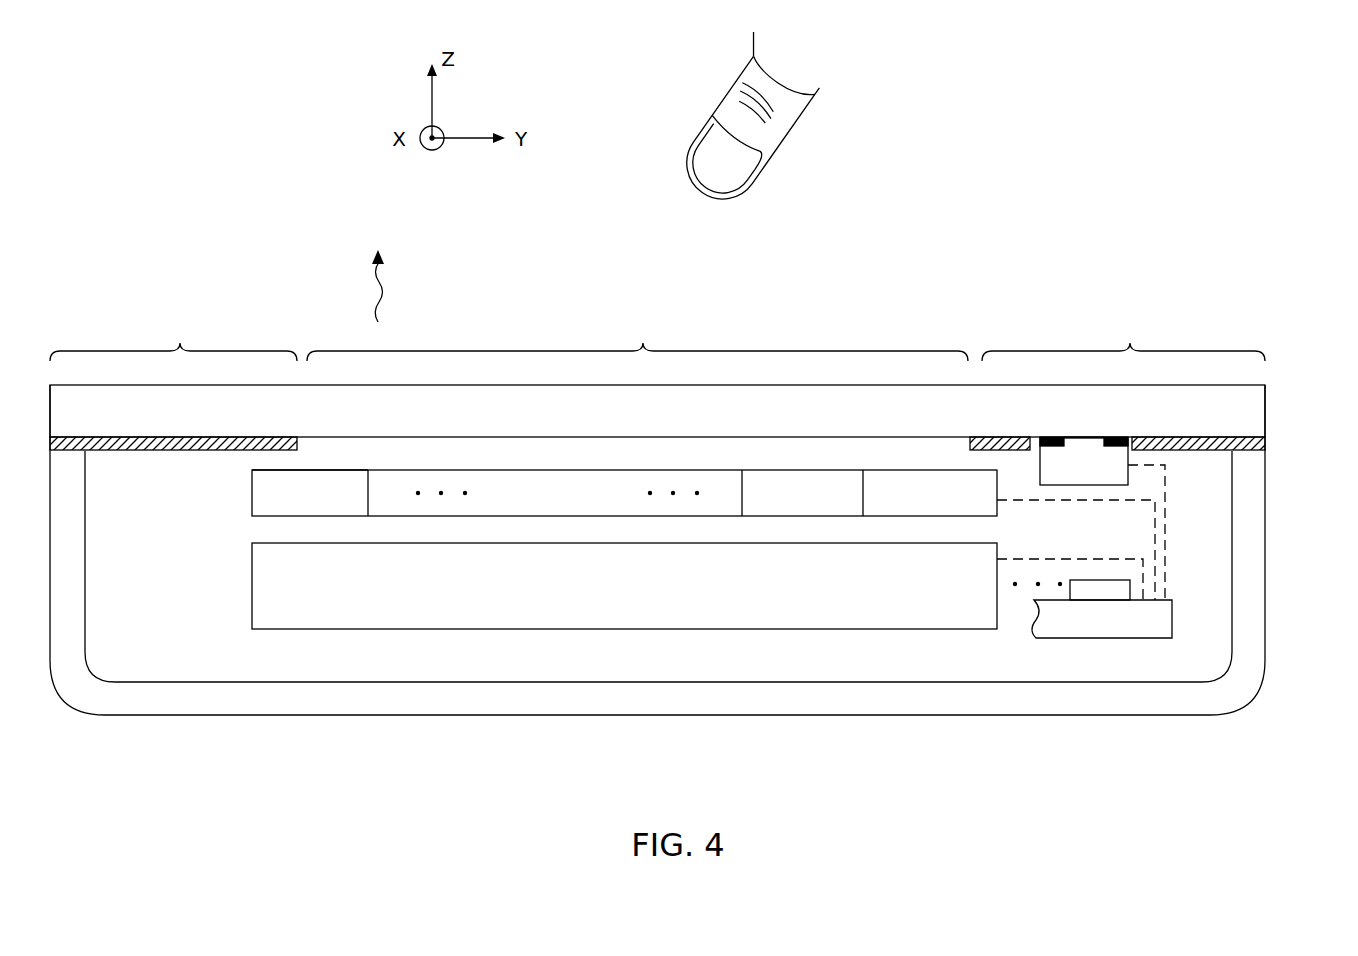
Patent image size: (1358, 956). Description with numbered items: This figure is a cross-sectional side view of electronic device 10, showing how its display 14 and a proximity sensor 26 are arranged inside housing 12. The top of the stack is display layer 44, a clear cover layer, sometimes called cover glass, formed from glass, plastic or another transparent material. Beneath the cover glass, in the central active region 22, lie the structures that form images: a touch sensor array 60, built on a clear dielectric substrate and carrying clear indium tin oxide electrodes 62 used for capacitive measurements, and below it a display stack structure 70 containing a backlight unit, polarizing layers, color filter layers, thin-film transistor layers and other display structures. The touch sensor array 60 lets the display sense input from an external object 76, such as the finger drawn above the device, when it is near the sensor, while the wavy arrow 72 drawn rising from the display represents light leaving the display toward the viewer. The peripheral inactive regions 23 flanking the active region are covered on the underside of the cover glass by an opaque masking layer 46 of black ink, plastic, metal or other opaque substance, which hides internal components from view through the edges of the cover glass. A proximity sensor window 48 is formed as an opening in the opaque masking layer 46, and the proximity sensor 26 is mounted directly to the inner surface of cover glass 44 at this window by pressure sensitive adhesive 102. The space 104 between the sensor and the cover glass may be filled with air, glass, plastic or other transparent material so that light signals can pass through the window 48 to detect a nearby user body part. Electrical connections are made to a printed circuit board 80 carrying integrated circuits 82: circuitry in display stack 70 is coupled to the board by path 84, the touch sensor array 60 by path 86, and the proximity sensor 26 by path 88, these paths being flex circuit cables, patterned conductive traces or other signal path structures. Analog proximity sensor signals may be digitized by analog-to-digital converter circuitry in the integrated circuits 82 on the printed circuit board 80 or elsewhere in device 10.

The electronic device 10 is at (1025, 41).
The housing 12 is at (148, 716).
The display 14 is at (756, 307).
The active region 22 is at (637, 340).
The inactive area 23 is at (657, 340).
The proximity sensor 26 is at (1080, 485).
The display layer 44 is at (1258, 412).
The opaque masking layer 46 is at (148, 451).
The proximity sensor window 48 is at (1062, 427).
The touch sensor array 60 is at (240, 470).
The electrodes 62 is at (320, 478).
The display stack structure 70 is at (240, 543).
The emitted light 72 is at (383, 291).
The external object 76 is at (722, 102).
The printed circuit board 80 is at (1076, 639).
The integrated circuits 82 is at (1123, 599).
The path 84 is at (1020, 558).
The path 86 is at (1155, 580).
The path 88 is at (1165, 523).
The pressure sensitive adhesive 102 is at (1050, 436).
The space 104 is at (1076, 433).